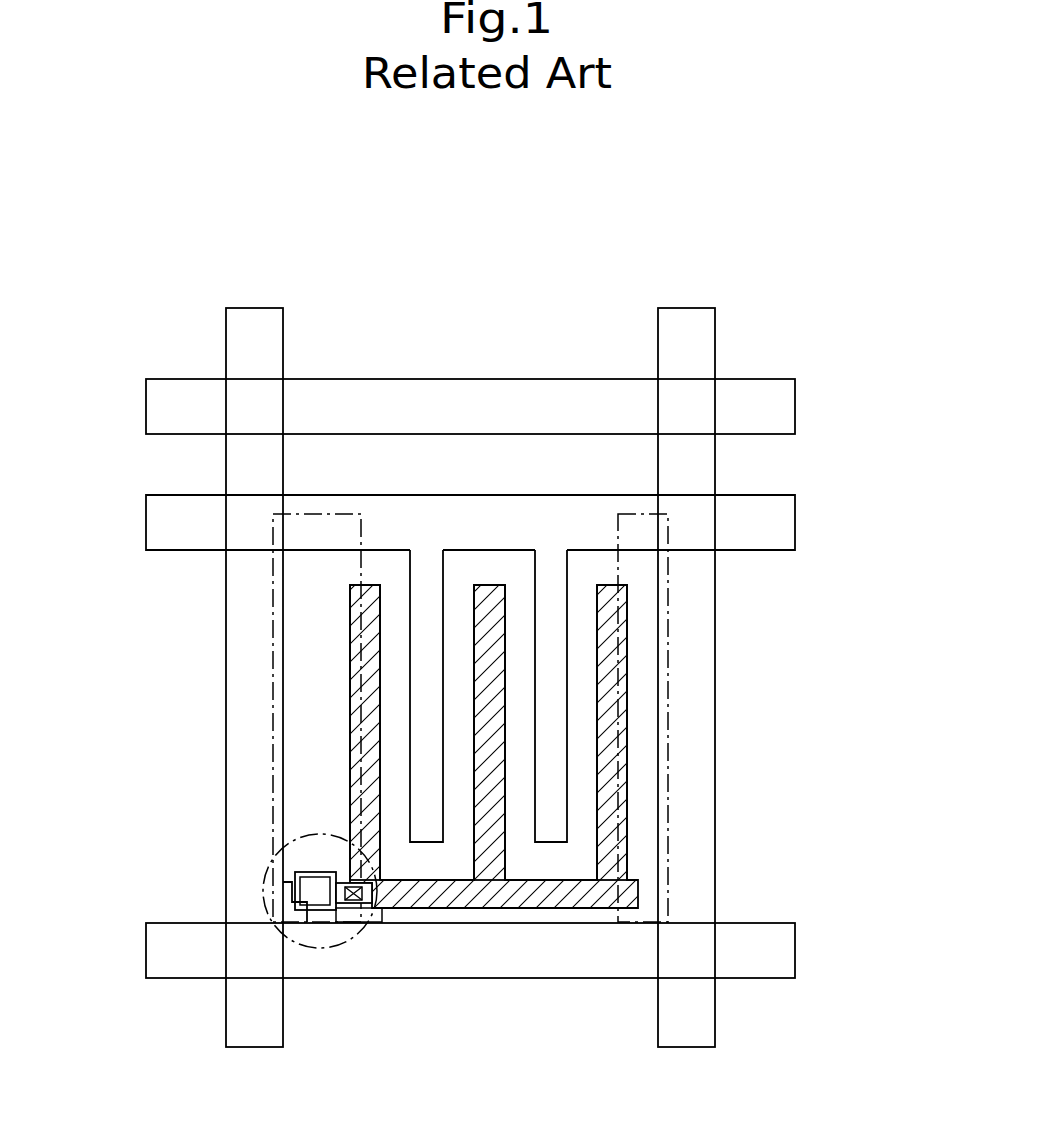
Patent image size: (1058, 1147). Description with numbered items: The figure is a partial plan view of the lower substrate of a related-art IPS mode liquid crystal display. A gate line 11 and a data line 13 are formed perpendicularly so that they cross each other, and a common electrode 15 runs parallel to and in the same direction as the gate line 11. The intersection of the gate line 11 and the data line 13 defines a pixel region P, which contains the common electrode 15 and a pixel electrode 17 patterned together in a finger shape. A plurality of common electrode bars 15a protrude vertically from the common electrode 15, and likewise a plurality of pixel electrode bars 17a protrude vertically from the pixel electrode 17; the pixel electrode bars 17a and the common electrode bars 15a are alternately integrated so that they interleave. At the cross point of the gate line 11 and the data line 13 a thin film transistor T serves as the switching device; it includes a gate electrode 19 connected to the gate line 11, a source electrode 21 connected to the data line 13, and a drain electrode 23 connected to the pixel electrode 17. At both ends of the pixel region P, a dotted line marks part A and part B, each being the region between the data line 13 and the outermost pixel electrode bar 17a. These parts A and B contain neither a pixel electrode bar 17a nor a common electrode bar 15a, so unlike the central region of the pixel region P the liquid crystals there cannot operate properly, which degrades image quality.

The pixel region P is at (378, 338).
The gate line 11 is at (760, 395).
The data line 13 is at (240, 687).
The common electrode 15 is at (777, 522).
The common electrode bars 15a is at (425, 650).
The pixel electrode 17 is at (562, 908).
The pixel electrode bars 17a is at (370, 719).
The gate electrode 19 is at (307, 915).
The source electrode 21 is at (295, 880).
The drain electrode 23 is at (373, 893).
The part A is at (273, 600).
The part B is at (668, 662).
The thin film transistor T is at (332, 950).